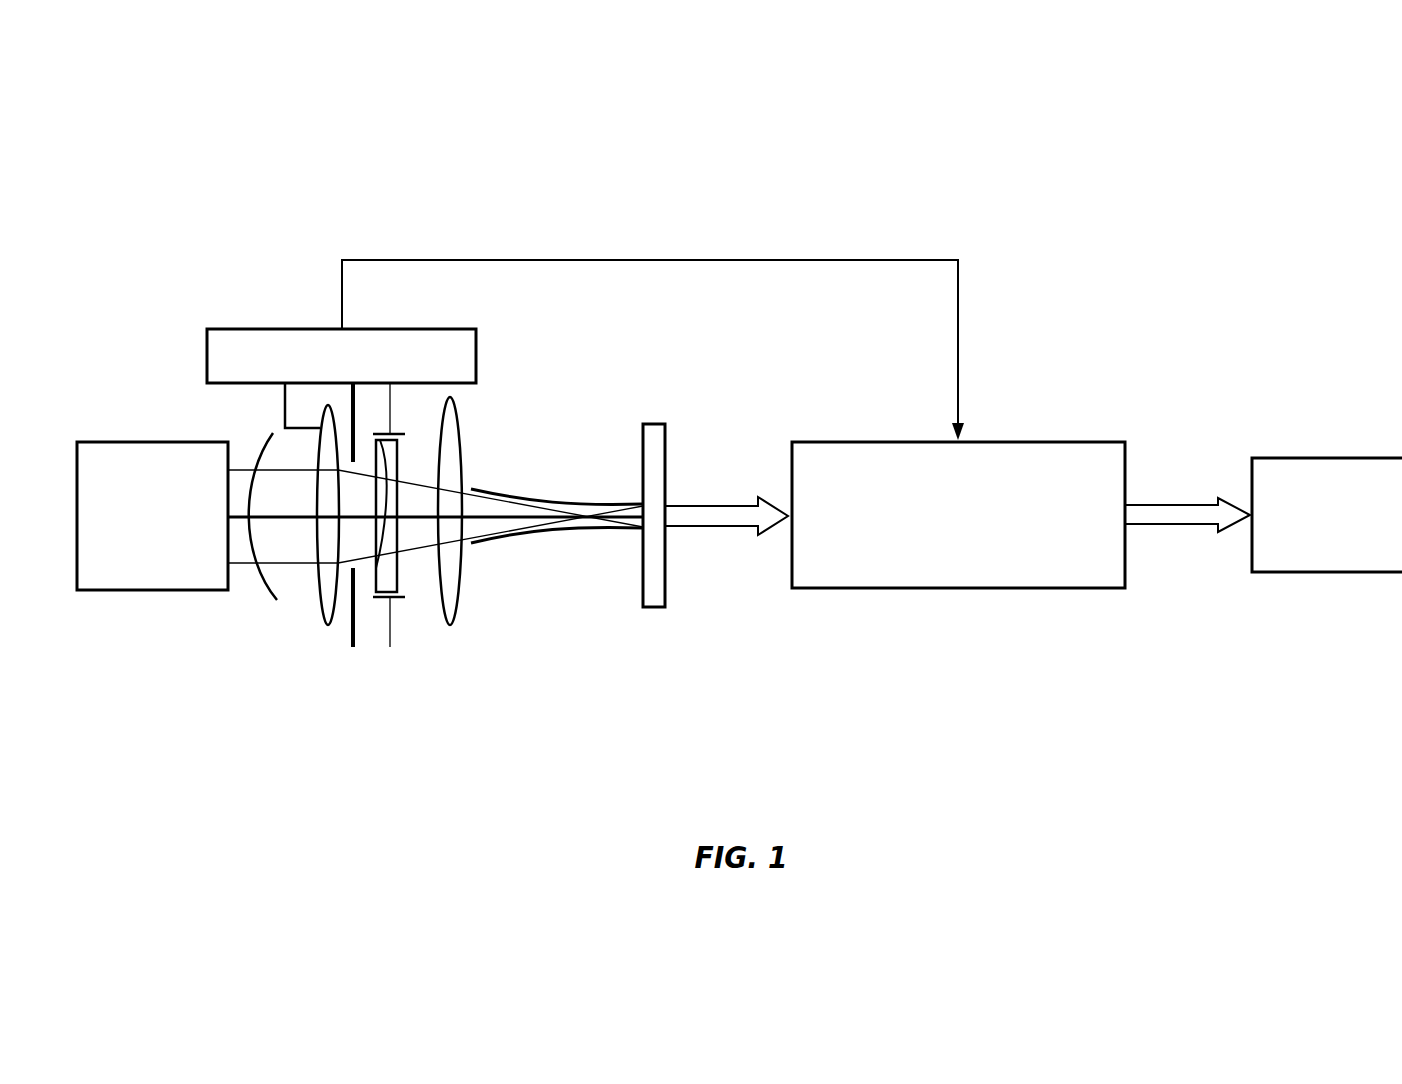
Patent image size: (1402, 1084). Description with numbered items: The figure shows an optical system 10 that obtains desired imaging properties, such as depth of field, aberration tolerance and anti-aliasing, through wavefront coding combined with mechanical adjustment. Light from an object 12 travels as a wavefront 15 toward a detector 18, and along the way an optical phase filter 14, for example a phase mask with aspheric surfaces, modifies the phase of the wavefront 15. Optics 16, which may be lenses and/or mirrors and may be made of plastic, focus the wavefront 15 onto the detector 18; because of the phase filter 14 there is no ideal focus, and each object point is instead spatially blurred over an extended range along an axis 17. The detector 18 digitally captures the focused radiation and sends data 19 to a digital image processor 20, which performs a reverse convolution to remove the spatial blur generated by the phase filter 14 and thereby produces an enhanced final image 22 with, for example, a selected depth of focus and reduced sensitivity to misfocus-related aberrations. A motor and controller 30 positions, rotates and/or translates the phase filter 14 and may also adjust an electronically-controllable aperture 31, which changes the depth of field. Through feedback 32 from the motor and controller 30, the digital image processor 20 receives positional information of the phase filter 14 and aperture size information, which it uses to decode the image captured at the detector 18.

The optical system 10 is at (183, 166).
The object 12 is at (101, 442).
The optical phase filter 14 is at (408, 436).
The wavefront 15 is at (256, 597).
The optics 16 is at (336, 622).
The axis 17 is at (493, 517).
The detector 18 is at (654, 424).
The data 19 is at (727, 527).
The digital image processor 20 is at (1057, 589).
The final image 22 is at (1375, 458).
The motor and controller 30 is at (476, 340).
The electronically-controllable aperture 31 is at (350, 396).
The feedback 32 is at (648, 260).